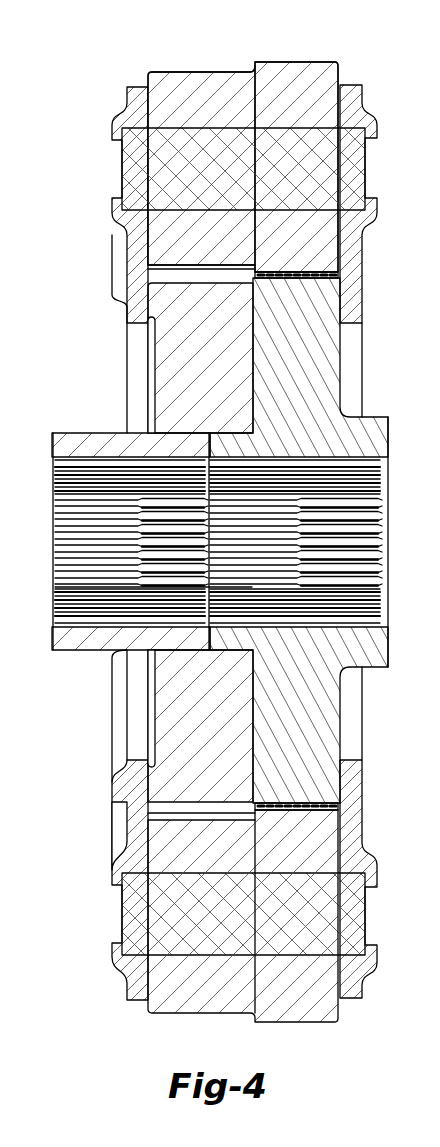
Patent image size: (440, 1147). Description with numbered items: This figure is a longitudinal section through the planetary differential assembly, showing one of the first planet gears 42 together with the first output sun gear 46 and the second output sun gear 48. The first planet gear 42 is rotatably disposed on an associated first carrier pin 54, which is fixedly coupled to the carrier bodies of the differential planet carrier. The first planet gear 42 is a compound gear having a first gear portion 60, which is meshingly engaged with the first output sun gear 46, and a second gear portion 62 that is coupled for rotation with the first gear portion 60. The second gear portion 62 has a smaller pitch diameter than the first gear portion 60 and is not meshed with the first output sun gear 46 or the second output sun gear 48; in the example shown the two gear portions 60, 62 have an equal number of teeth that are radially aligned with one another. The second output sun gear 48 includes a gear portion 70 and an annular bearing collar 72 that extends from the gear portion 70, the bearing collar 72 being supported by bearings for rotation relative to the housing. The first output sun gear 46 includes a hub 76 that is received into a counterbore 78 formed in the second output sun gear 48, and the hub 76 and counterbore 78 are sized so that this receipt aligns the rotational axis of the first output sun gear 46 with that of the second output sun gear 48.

The first planet gear 42 is at (258, 58).
The first output sun gear 46 is at (315, 358).
The second output sun gear 48 is at (180, 367).
The first carrier pin 54 is at (147, 163).
The first gear portion 60 is at (308, 62).
The second gear portion 62 is at (171, 72).
The gear portion 70 is at (181, 795).
The annular bearing collar 72 is at (82, 442).
The hub 76 is at (227, 642).
The counterbore 78 is at (222, 653).